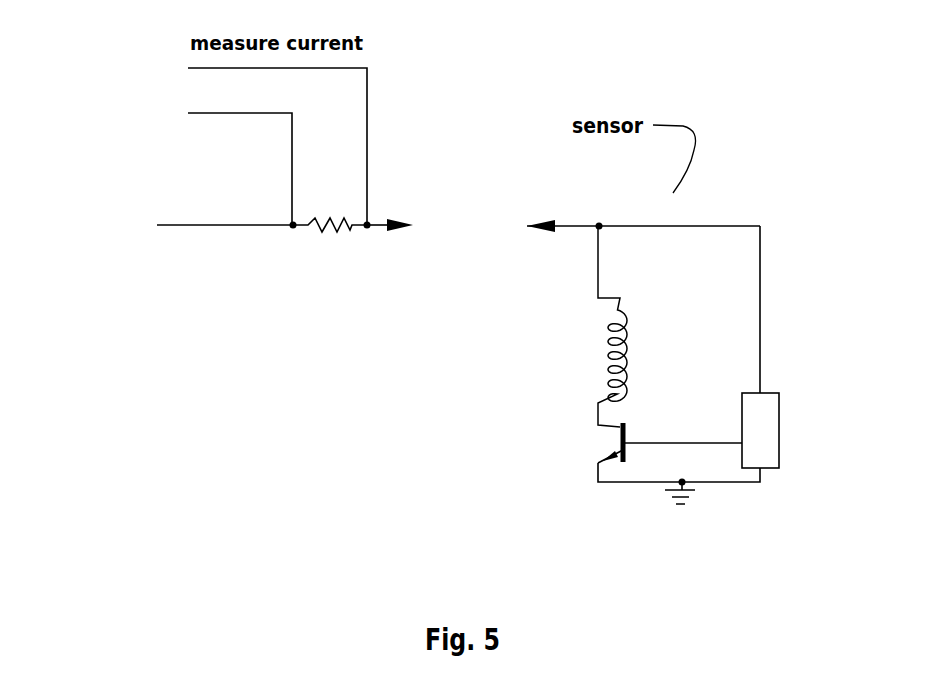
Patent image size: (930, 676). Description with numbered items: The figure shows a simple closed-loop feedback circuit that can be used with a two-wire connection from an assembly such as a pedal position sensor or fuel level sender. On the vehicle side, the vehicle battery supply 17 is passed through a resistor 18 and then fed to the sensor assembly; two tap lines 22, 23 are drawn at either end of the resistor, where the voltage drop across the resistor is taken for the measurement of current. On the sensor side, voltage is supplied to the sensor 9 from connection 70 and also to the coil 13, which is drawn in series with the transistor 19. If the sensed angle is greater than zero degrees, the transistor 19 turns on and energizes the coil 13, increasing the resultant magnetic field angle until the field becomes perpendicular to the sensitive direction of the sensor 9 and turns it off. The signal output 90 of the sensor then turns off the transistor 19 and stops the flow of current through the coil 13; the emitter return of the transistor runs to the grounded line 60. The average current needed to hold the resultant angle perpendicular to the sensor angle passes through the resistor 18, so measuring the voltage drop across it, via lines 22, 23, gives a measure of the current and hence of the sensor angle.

The vehicle battery supply 17 is at (142, 199).
The current measurement line 22 is at (284, 142).
The voltage tap line 23 is at (226, 162).
The resistor 18 is at (322, 236).
The coil 13 is at (620, 298).
The transistor 19 is at (610, 445).
The signal output 90 is at (682, 437).
The connection 70 is at (762, 373).
The sensor 9 is at (779, 459).
The ground line 60 is at (745, 484).